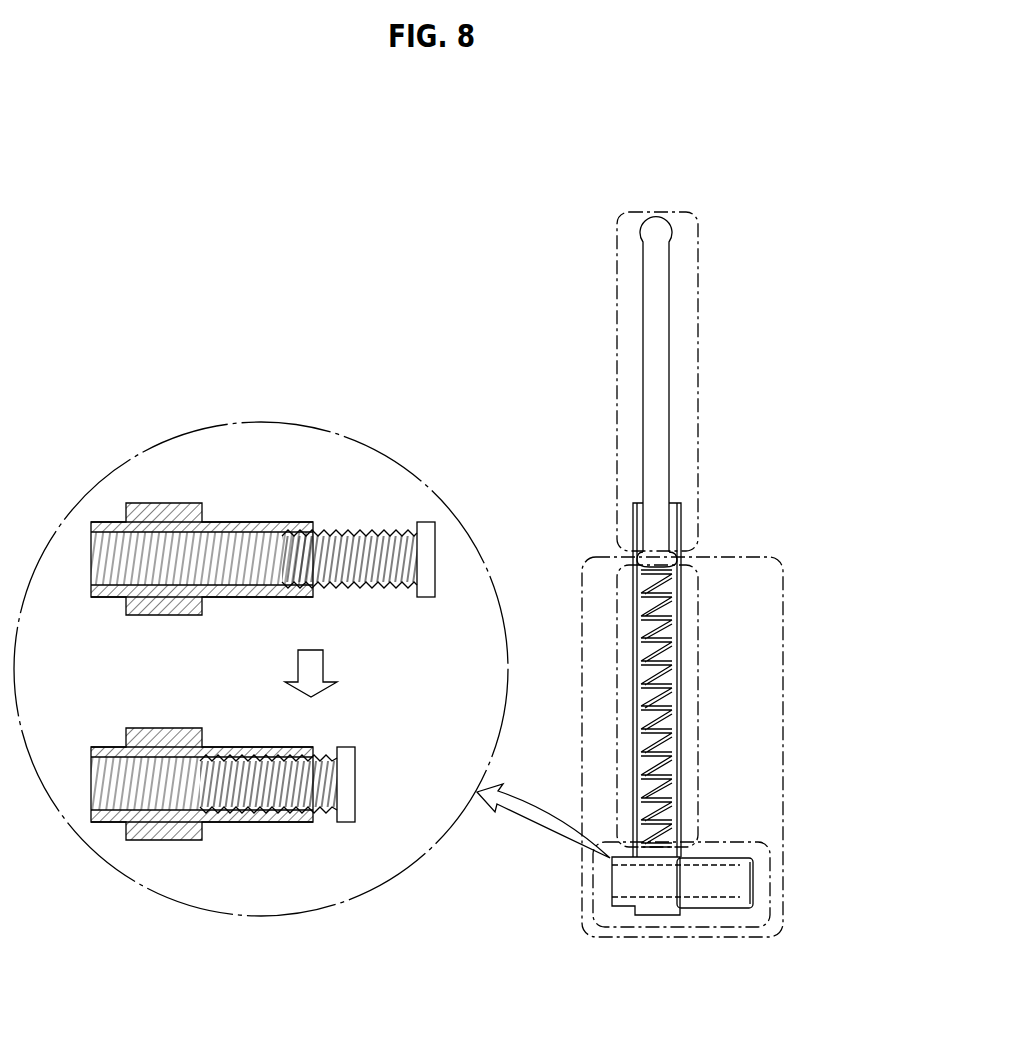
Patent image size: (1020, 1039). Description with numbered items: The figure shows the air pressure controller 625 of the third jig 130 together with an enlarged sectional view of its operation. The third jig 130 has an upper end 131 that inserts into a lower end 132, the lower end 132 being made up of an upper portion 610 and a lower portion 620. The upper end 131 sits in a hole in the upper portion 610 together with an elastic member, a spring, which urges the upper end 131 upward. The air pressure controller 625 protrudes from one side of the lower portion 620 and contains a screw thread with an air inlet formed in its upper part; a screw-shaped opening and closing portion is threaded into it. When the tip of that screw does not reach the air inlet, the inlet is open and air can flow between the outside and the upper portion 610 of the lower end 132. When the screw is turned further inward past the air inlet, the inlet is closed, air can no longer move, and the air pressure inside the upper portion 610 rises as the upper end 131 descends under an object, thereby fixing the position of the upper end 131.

The third jig 130 is at (698, 131).
The upper end 131 is at (698, 382).
The lower end 132 is at (783, 603).
The upper portion 610 is at (698, 683).
The lower portion 620 is at (770, 843).
The air pressure controller 625 is at (717, 908).